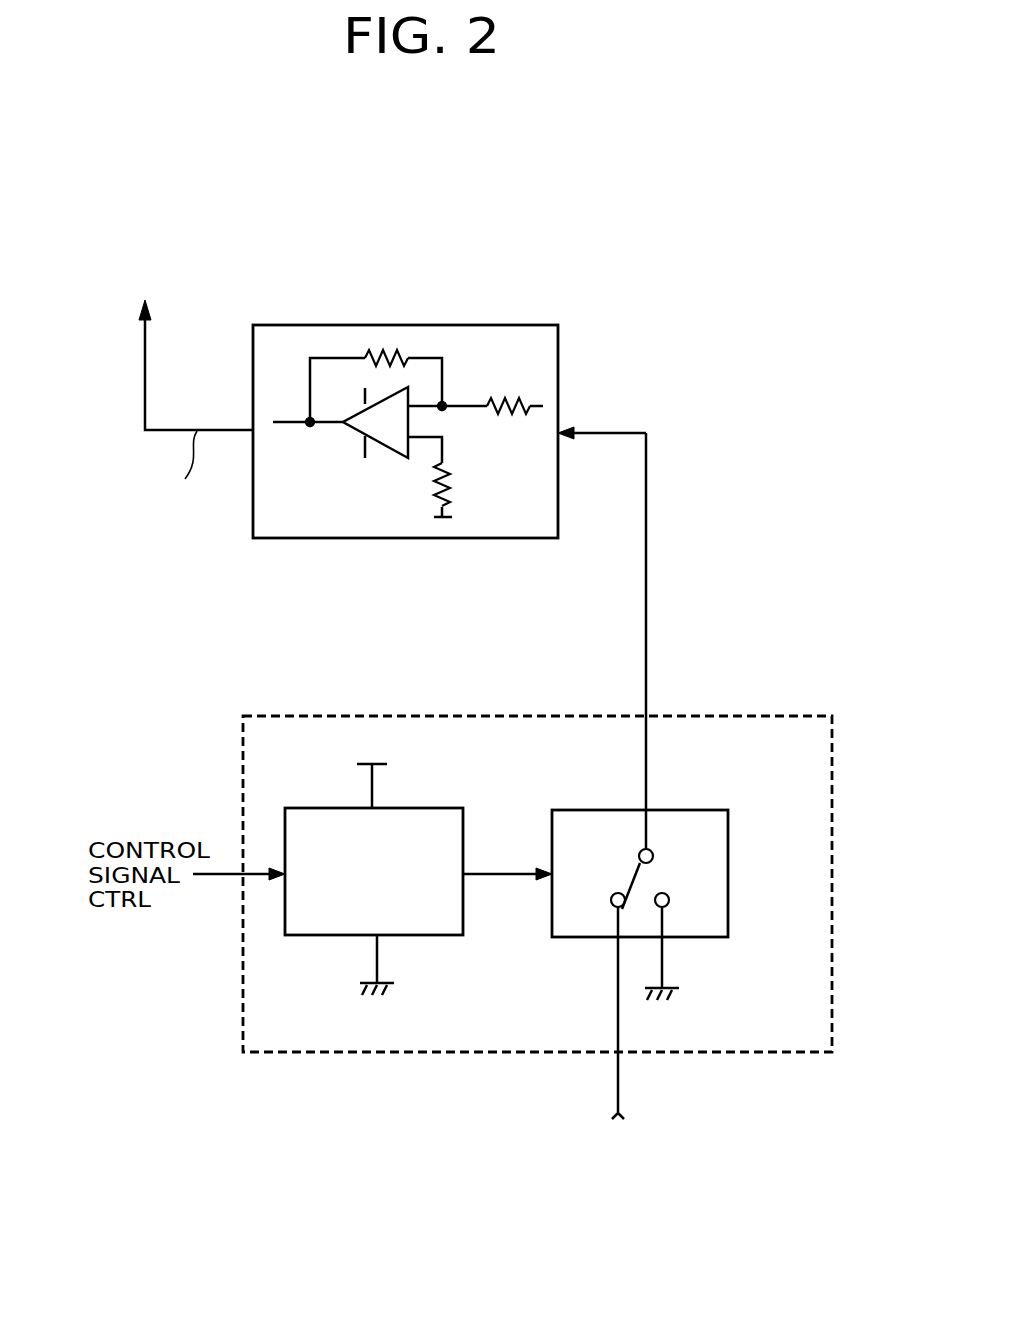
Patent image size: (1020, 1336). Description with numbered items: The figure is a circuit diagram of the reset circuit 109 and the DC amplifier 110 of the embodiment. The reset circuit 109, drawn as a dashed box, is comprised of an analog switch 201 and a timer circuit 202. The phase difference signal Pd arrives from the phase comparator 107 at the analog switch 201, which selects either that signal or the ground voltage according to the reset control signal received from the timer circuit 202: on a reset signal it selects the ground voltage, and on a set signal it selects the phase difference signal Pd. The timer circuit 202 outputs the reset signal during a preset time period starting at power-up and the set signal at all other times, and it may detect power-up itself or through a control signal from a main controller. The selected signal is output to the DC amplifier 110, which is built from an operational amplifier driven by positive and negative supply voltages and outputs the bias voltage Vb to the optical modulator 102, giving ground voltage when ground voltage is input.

The optical modulator 102 is at (153, 389).
The phase comparator 107 is at (687, 1055).
The reset circuit 109 is at (322, 713).
The DC amplifier 110 is at (332, 323).
The analog switch 201 is at (728, 864).
The timer circuit 202 is at (430, 808).